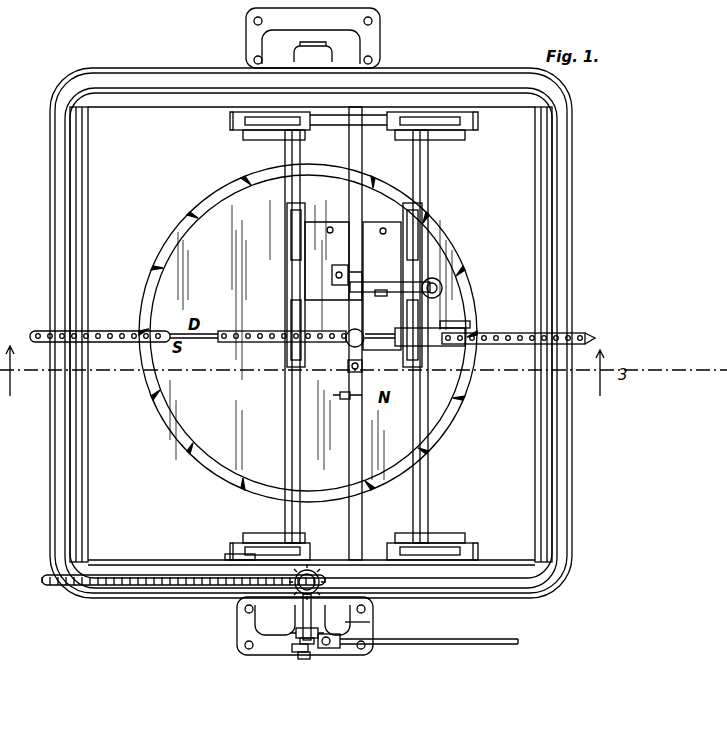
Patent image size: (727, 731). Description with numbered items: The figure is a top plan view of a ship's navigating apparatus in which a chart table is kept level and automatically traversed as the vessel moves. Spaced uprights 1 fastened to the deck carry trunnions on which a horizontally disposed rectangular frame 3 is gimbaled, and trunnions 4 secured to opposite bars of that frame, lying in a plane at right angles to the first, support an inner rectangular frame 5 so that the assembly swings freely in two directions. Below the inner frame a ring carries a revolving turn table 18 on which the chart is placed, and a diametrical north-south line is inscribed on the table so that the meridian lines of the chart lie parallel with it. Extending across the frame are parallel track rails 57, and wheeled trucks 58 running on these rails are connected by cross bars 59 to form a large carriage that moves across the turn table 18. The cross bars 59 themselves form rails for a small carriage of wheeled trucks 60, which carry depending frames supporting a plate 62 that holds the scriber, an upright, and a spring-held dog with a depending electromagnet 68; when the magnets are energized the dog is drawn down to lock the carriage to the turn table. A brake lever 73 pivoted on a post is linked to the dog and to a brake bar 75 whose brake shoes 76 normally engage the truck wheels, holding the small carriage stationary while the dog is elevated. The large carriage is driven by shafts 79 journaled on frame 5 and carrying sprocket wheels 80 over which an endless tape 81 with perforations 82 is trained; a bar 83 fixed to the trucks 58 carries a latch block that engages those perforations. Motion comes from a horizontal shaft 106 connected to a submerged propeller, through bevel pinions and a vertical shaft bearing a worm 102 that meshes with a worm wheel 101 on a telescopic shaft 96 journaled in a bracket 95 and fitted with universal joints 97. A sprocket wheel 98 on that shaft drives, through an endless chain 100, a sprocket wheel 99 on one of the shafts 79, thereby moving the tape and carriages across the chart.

The uprights 1 is at (350, 626).
The rectangular frame 3 is at (570, 507).
The trunnions 4 is at (246, 39).
The rectangular frame 5 is at (490, 586).
The turn table 18 is at (230, 310).
The track rails 57 is at (498, 118).
The wheeled trucks 58 is at (466, 140).
The cross bars 59 is at (286, 500).
The wheeled trucks 60 is at (293, 233).
The plate 62 is at (353, 286).
The electromagnet 68 is at (338, 265).
The brake lever 73 is at (438, 282).
The brake bar 75 is at (444, 290).
The brake shoes 76 is at (383, 296).
The shafts 79 is at (96, 246).
The sprocket wheels 80 is at (108, 330).
The tape 81 is at (470, 340).
The perforations 82 is at (455, 322).
The bar 83 is at (358, 430).
The bracket 95 is at (322, 650).
The telescopic shaft 96 is at (302, 624).
The universal joint 97 is at (302, 660).
The sprocket wheel 98 is at (232, 560).
The sprocket wheel 99 is at (52, 588).
The endless chain 100 is at (156, 586).
The worm wheel 101 is at (310, 656).
The worm 102 is at (340, 640).
The horizontal shaft 106 is at (456, 648).